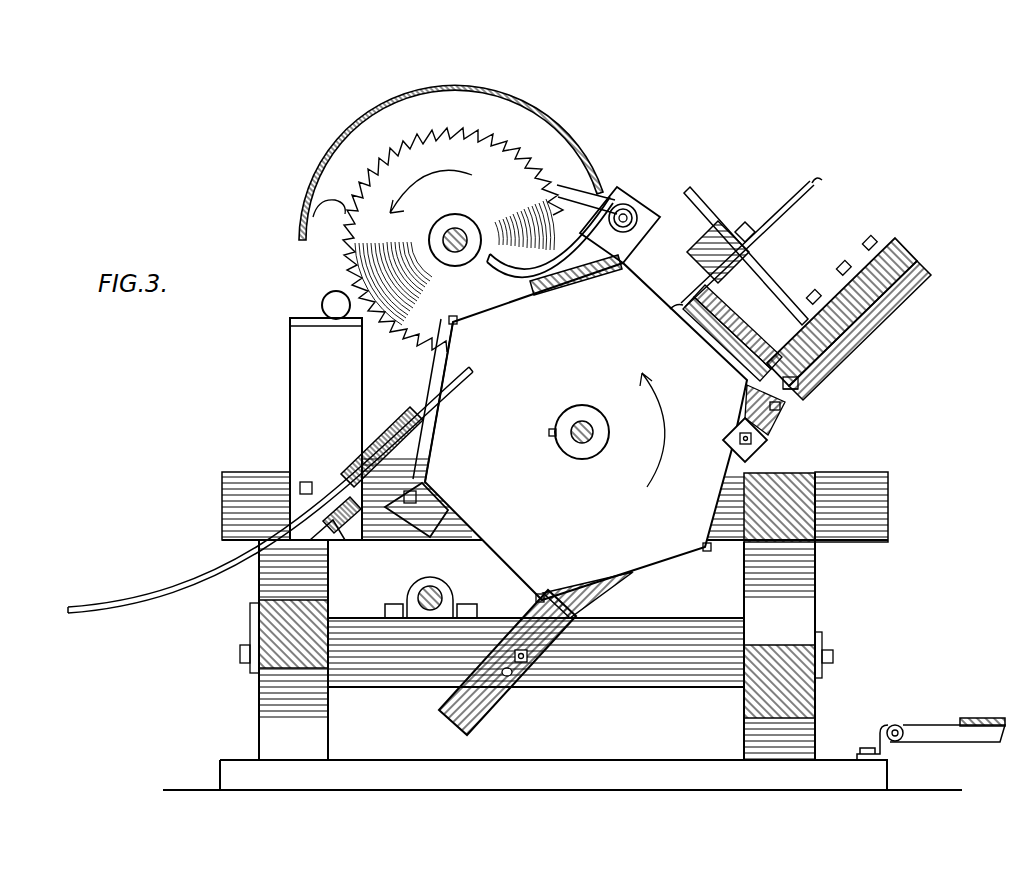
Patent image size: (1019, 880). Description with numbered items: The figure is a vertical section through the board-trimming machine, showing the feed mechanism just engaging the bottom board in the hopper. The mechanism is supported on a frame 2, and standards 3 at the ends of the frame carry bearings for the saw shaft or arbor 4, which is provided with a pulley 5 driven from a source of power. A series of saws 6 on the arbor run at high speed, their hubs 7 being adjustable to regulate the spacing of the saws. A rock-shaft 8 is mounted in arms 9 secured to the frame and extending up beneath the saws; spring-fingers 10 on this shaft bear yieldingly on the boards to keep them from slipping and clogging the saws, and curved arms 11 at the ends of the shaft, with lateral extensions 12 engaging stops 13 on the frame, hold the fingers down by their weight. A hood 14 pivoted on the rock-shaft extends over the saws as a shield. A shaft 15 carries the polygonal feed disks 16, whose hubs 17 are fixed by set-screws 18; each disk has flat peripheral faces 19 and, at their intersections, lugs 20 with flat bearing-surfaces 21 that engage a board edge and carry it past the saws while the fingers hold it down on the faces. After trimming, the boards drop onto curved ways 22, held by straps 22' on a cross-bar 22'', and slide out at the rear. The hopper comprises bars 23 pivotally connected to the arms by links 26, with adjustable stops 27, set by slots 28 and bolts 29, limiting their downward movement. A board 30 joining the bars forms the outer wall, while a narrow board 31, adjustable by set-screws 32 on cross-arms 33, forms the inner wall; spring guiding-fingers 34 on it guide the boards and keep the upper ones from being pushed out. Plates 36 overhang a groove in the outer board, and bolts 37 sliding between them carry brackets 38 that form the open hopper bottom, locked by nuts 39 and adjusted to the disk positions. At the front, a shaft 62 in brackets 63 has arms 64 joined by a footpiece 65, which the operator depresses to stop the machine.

The frame 2 is at (258, 700).
The standards 3 is at (412, 386).
The saw shaft or arbor 4 is at (468, 232).
The pulley 5 is at (418, 612).
The saws 6 is at (482, 150).
The hubs 7 is at (443, 228).
The rock-shaft 8 is at (632, 212).
The arms 9 is at (420, 628).
The spring-fingers 10 is at (600, 237).
The curved arms 11 is at (607, 204).
The lateral extensions 12 is at (322, 304).
The stops 13 is at (306, 429).
The hood 14 is at (470, 96).
The shaft 15 is at (581, 420).
The feed disks or plates 16 is at (586, 431).
The hubs 17 is at (586, 456).
The set-screws 18 is at (549, 434).
The flat peripheral faces 19 is at (490, 568).
The lugs 20 is at (455, 316).
The flat bearing-surfaces 21 is at (459, 323).
The curved ways 22 is at (270, 490).
The straps 22' is at (339, 547).
The cross-bar 22'' is at (333, 493).
The bars 23 is at (850, 352).
The links 26 is at (762, 450).
The stops 27 is at (548, 637).
The slots 28 is at (528, 654).
The bolts 29 is at (512, 672).
The board 30 is at (842, 310).
The narrow board or bar 31 is at (708, 250).
The set-screws 32 is at (744, 222).
The cross-arms 33 is at (773, 278).
The spring guiding-fingers 34 is at (788, 226).
The plates 36 is at (800, 382).
The bolt 37 is at (787, 348).
The brackets 38 is at (767, 392).
The nuts 39 is at (800, 391).
The shaft 62 is at (896, 724).
The brackets 63 is at (890, 751).
The arms 64 is at (931, 727).
The footpiece 65 is at (984, 718).